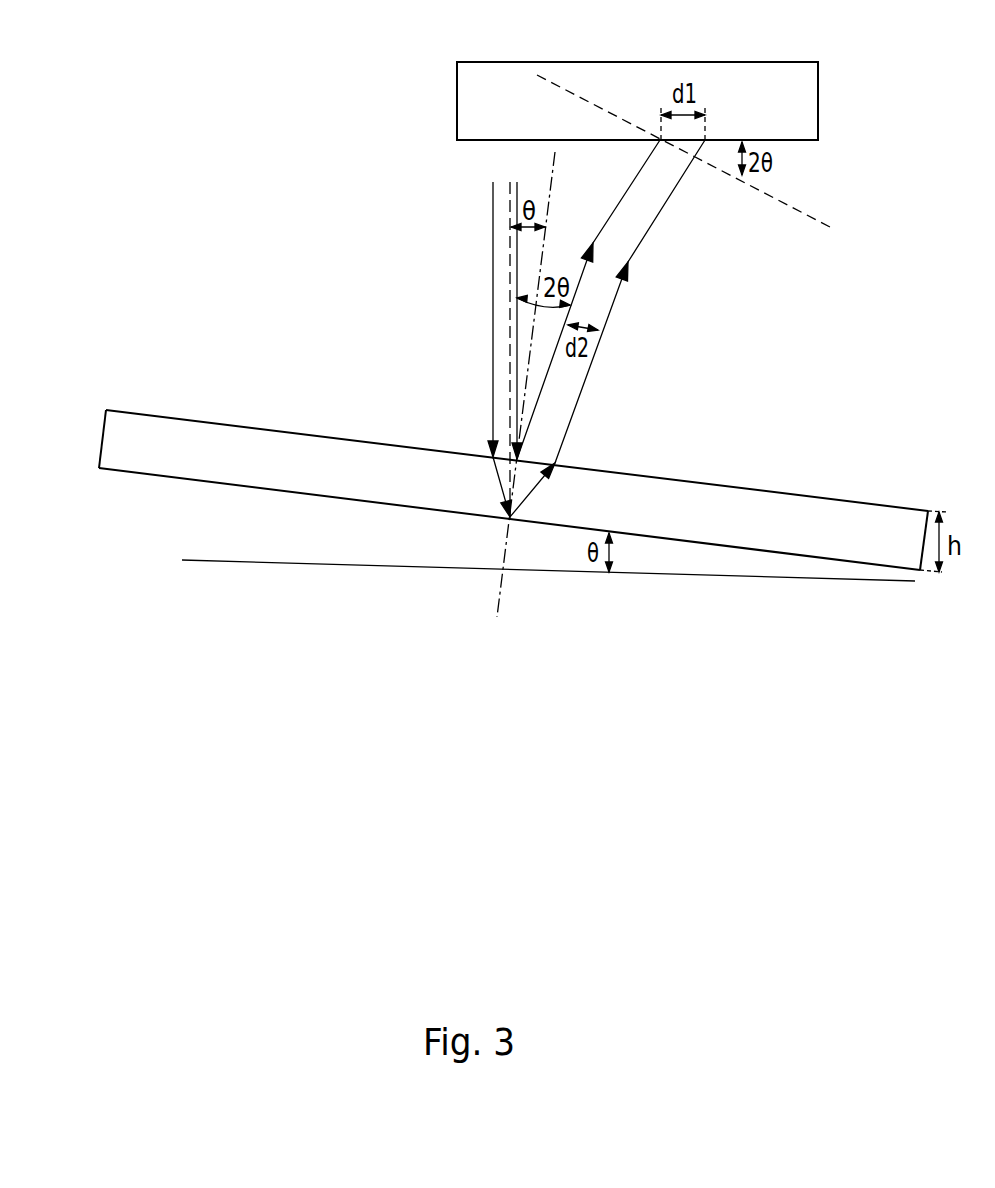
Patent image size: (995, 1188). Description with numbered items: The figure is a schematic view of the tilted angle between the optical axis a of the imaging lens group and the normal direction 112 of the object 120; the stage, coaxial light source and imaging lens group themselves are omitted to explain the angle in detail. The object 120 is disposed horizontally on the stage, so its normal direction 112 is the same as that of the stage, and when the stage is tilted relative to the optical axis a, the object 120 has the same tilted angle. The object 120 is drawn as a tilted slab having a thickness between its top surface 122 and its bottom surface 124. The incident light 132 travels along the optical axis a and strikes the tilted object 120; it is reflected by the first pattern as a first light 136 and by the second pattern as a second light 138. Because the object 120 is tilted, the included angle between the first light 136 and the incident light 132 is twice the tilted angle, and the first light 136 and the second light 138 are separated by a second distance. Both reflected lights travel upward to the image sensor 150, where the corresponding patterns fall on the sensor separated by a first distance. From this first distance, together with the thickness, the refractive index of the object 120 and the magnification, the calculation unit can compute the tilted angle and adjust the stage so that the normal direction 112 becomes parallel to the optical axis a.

The image sensor 150 is at (482, 78).
The first light 136 is at (620, 203).
The second light 138 is at (645, 235).
The incident light 132 is at (516, 312).
The optical axis a is at (509, 280).
The top surface 122 is at (153, 399).
The object 120 is at (110, 421).
The bottom surface 124 is at (143, 459).
The normal direction 112 is at (498, 607).